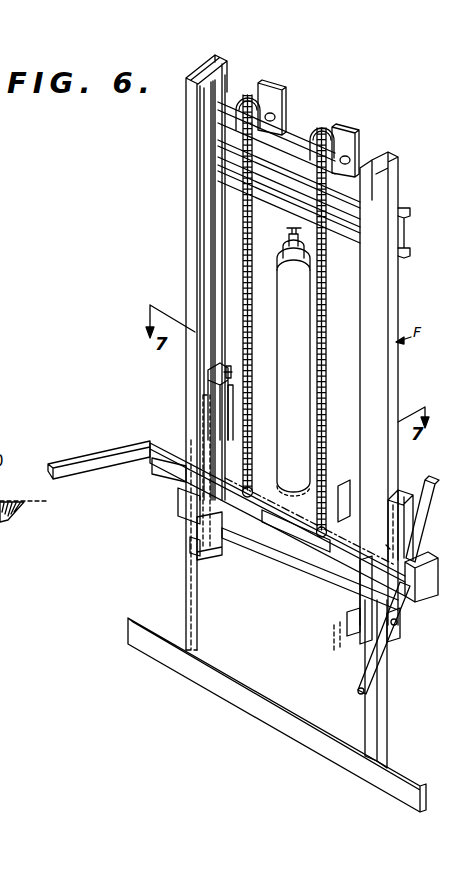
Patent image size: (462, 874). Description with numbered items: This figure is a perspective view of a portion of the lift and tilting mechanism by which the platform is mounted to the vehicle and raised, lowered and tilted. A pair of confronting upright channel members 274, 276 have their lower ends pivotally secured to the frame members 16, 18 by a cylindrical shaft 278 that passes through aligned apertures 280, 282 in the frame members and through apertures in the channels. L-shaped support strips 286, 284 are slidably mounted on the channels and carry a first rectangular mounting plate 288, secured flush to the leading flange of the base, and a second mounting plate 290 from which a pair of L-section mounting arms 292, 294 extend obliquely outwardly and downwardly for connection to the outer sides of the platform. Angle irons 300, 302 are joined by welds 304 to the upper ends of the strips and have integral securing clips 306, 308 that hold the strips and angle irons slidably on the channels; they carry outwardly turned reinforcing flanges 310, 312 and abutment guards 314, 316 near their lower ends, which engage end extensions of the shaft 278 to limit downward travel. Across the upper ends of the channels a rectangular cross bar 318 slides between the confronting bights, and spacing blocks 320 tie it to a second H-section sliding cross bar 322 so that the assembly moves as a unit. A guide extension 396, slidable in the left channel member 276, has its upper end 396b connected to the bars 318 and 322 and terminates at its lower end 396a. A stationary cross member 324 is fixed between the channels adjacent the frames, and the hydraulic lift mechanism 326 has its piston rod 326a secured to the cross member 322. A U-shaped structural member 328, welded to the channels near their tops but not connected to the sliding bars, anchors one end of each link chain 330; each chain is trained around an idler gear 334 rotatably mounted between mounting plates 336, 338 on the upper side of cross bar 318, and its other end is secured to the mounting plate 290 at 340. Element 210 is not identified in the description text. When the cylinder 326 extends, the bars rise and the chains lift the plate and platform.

The frame member 16 is at (410, 586).
The frame member 18 is at (216, 560).
The pin 210 is at (390, 547).
The upright channel member 274 is at (393, 180).
The upright channel member 276 is at (186, 148).
The cylindrical shaft 278 is at (291, 571).
The aperture 280 is at (340, 640).
The aperture 282 is at (232, 542).
The L-shaped support strip 284 is at (195, 624).
The L-shaped support strip 286 is at (388, 738).
The first rectangular mounting plate 288 is at (286, 725).
The second mounting plate 290 is at (167, 462).
The mounting arm 292 is at (95, 447).
The mounting arm 294 is at (364, 659).
The angle iron 300 is at (200, 425).
The angle iron 302 is at (424, 511).
The weld 304 is at (345, 622).
The securing clip 306 is at (234, 408).
The securing clip 308 is at (358, 598).
The reinforcing flange 310 is at (207, 372).
The reinforcing flange 312 is at (406, 484).
The abutment guard 314 is at (188, 502).
The abutment guard 316 is at (402, 624).
The cross bar 318 is at (292, 136).
The spacing block 320 is at (270, 190).
The second sliding cross bar 322 is at (340, 258).
The stationary cross member 324 is at (346, 514).
The hydraulic lift mechanism 326 is at (285, 310).
The piston rod 326a is at (287, 236).
The U-shaped structural member 328 is at (400, 234).
The link chain 330 is at (329, 338).
The idler gear 334 is at (362, 139).
The mounting plate 336 is at (339, 130).
The mounting plate 338 is at (362, 154).
The chain attachment point 340 is at (277, 560).
The guide extension 396 is at (210, 290).
The lower end of guide extension 396a is at (230, 372).
The upper end of guide extension 396b is at (242, 84).